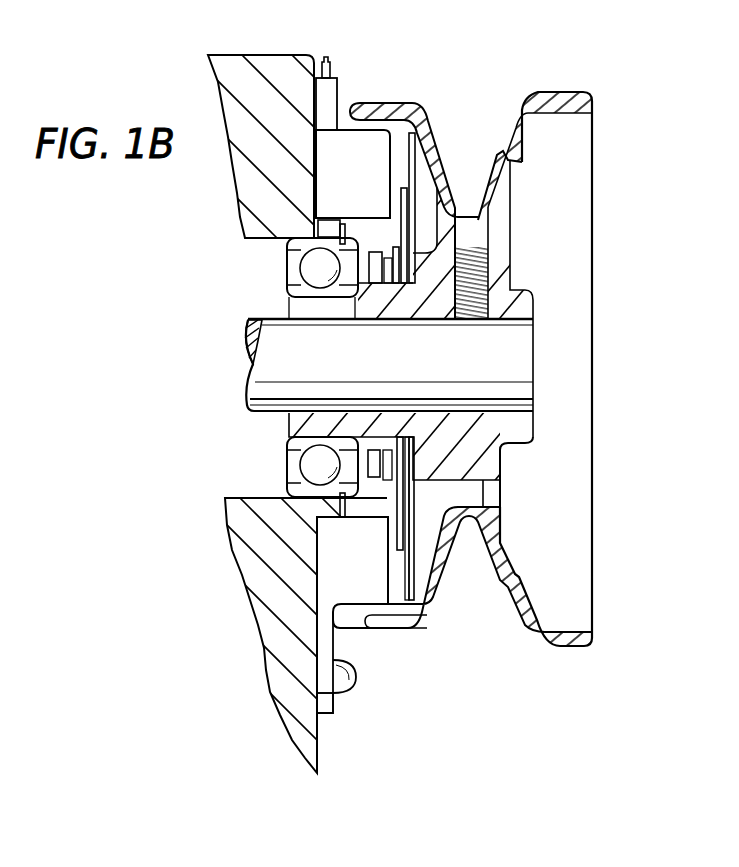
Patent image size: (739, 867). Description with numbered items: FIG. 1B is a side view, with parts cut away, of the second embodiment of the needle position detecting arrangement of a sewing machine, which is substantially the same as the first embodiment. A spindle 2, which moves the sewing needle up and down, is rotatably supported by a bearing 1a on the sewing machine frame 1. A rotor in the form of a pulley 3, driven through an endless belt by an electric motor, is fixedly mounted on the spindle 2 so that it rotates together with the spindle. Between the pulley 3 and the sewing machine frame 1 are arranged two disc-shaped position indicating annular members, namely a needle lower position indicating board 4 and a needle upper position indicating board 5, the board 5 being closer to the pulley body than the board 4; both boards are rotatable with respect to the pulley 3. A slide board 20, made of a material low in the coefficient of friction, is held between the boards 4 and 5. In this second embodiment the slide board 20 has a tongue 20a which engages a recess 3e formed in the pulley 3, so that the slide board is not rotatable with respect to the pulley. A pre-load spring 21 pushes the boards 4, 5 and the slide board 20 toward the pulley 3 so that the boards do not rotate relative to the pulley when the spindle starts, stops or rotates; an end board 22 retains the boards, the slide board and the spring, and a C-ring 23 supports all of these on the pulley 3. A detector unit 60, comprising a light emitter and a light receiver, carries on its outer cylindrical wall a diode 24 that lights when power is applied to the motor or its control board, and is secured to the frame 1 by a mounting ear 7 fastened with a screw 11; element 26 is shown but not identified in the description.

The sewing machine frame 1 is at (268, 66).
The bearing 1a is at (305, 267).
The spindle 2 is at (525, 348).
The pulley 3 is at (541, 100).
The recess 3e is at (400, 411).
The needle lower position indicating board 4 is at (414, 202).
The needle upper position indicating board 5 is at (420, 152).
The mounting ear 7 is at (327, 712).
The screw 11 is at (348, 685).
The slide board 20 is at (400, 466).
The tongue 20a is at (502, 452).
The pre-load spring 21 is at (398, 450).
The end board 22 is at (315, 507).
The C-ring 23 is at (372, 462).
The diode 24 is at (327, 60).
The coil 26 is at (328, 100).
The detector unit 60 is at (370, 140).